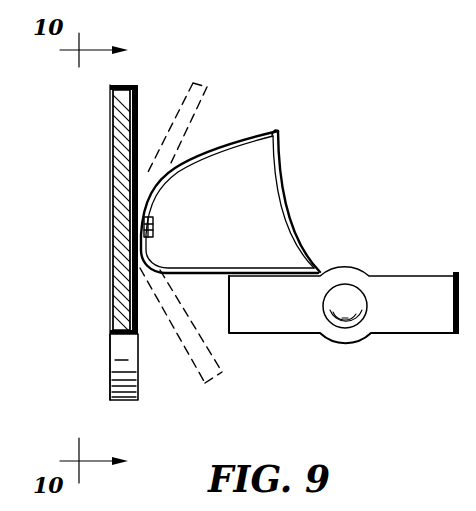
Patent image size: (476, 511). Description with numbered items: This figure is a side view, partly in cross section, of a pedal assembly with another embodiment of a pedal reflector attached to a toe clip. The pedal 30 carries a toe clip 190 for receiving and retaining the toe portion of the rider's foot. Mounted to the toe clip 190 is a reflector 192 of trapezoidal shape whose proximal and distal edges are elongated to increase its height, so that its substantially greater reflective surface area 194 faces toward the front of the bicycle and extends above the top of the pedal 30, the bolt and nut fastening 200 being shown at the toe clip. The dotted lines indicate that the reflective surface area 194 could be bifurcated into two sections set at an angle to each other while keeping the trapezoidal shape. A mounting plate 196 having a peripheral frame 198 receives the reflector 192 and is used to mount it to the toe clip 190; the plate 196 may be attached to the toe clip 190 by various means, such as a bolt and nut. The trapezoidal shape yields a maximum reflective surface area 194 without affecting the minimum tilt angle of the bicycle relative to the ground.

The pedal 30 is at (391, 262).
The toe clip 190 is at (246, 141).
The reflector 192 is at (122, 268).
The reflective surface area 194 is at (115, 213).
The mounting plate 196 is at (138, 100).
The peripheral frame 198 is at (123, 87).
The clip 200 is at (155, 222).